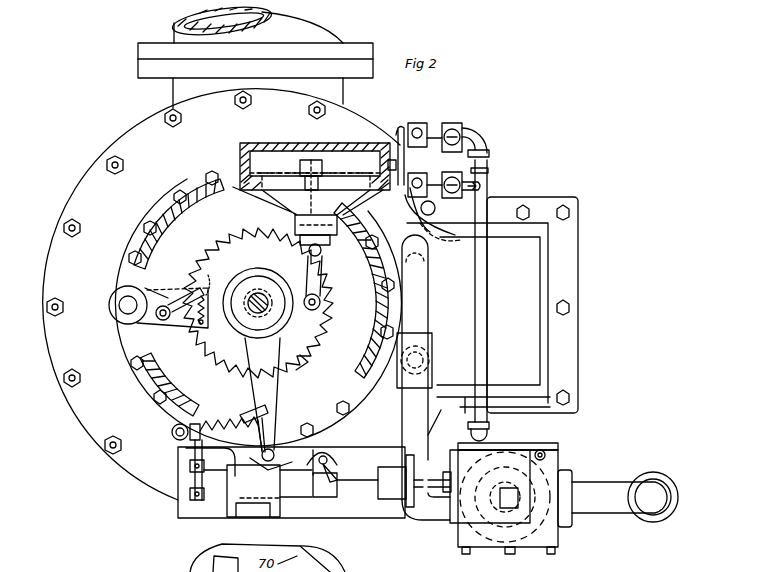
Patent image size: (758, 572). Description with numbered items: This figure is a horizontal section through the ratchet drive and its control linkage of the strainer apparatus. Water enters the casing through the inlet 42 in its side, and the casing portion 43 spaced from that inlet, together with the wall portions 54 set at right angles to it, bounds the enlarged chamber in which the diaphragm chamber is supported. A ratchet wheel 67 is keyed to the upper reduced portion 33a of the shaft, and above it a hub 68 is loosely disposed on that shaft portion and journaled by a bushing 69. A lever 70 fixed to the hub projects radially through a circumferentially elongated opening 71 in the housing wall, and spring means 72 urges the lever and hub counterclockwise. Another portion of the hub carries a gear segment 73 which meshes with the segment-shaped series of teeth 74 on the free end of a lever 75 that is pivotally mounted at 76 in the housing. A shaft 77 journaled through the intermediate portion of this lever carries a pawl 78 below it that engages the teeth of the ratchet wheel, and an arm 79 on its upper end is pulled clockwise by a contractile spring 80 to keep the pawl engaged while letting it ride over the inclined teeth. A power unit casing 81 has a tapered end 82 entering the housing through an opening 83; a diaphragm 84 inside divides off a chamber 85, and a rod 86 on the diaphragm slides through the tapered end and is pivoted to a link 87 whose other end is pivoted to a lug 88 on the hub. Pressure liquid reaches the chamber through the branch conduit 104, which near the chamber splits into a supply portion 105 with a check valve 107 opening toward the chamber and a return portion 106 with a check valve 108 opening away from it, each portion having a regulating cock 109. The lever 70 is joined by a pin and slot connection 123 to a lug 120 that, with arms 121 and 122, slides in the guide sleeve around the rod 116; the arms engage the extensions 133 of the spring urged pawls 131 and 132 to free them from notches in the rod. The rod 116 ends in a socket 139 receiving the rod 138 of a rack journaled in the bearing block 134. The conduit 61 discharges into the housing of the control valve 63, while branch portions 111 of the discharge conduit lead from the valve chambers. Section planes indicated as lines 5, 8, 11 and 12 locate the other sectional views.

The inlet 42 is at (176, 92).
The section line 8- 8 is at (386, 25).
The power unit casing 81 is at (270, 142).
The diaphragm 84 is at (299, 186).
The chamber 85 is at (316, 165).
The check valve 107 is at (418, 128).
The supply conduit portion 105 is at (452, 128).
The section line 12- 12 is at (400, 137).
The cock 109 is at (453, 176).
The section line 11- 11 is at (398, 190).
The return conduit portion 106 is at (436, 208).
The check valve 108 is at (402, 218).
The rod 86 is at (322, 196).
The tapered end 82 is at (286, 210).
The opening 83 is at (327, 251).
The link 87 is at (324, 280).
The ratchet wheel 67 is at (232, 232).
The hub 68 is at (240, 275).
The bushing 69 is at (256, 275).
The gear segment 73 is at (213, 276).
The pawl 78 is at (170, 276).
The lever 75 is at (156, 285).
The contractile spring 80 is at (186, 297).
The pivotal mounting 76 is at (116, 314).
The arm 79 is at (173, 317).
The shaft 77 is at (168, 323).
The segment-shaped series of teeth 74 is at (236, 340).
The upper reduced portion of the shaft 33a is at (256, 314).
The lug 88 is at (310, 311).
The lever 70 is at (298, 354).
The wall portions 54 is at (500, 236).
The casing portion 43 is at (565, 272).
The section line 5- 5 is at (85, 312).
The branch conduit 104 is at (487, 318).
The conduit 61 is at (423, 377).
The rod 138 is at (441, 468).
The control valve 63 is at (557, 459).
The circumferentially elongated opening 71 is at (190, 434).
The spring means 72 is at (234, 418).
The pin and slot connection 123 is at (262, 433).
The arm 121 is at (215, 450).
The lug 120 is at (265, 456).
The spring urged pawl 131 is at (185, 470).
The pawl extensions 133 is at (339, 440).
The arm 122 is at (330, 452).
The spring urged pawl 132 is at (338, 462).
The rod 116 is at (333, 500).
The socket 139 is at (383, 517).
The bearing block 134 is at (460, 516).
The branch portions 111 is at (605, 514).